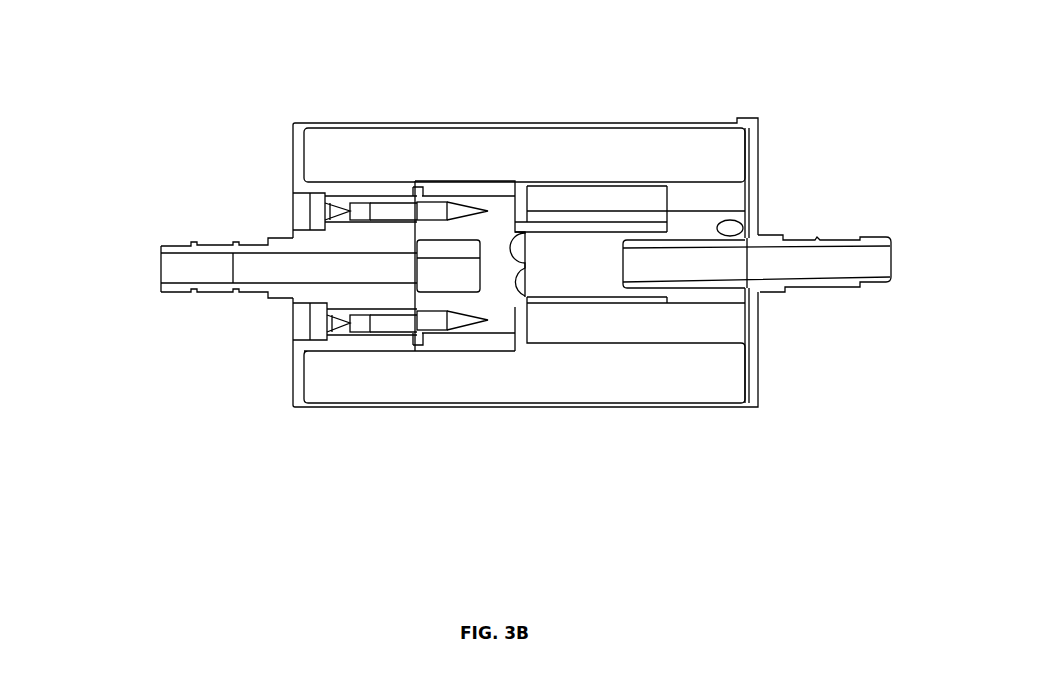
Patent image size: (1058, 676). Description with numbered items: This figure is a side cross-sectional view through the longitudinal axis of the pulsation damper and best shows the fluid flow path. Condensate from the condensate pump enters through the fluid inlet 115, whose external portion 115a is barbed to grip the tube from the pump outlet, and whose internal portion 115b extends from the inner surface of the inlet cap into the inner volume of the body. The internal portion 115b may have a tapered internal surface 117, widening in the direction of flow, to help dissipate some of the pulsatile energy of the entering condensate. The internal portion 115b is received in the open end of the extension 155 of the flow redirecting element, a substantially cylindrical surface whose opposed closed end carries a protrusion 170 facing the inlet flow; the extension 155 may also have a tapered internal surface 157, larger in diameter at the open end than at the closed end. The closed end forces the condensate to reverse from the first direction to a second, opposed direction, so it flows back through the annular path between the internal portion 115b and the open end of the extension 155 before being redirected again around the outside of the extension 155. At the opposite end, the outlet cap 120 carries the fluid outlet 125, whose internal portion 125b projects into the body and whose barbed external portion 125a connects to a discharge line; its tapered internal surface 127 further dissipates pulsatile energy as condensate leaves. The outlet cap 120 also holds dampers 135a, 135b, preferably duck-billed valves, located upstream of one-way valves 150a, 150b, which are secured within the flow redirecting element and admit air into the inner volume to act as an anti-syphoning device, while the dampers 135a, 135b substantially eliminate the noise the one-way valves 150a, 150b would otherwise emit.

The fluid inlet 115 is at (792, 328).
The external portion of the fluid inlet 115a is at (815, 287).
The internal portion of the fluid inlet 115b is at (700, 287).
The tapered internal surface 117 is at (705, 250).
The outlet cap 120 is at (295, 404).
The fluid outlet 125 is at (234, 249).
The external portion of the fluid outlet 125a is at (205, 244).
The internal portion of the fluid outlet 125b is at (327, 303).
The tapered internal surface 127 is at (277, 254).
The damper 135a is at (313, 198).
The damper 135b is at (328, 327).
The one-way valve 150a is at (436, 201).
The one-way valve 150b is at (477, 330).
The extension 155 is at (608, 302).
The tapered internal surface 157 is at (553, 297).
The protrusion 170 is at (535, 265).